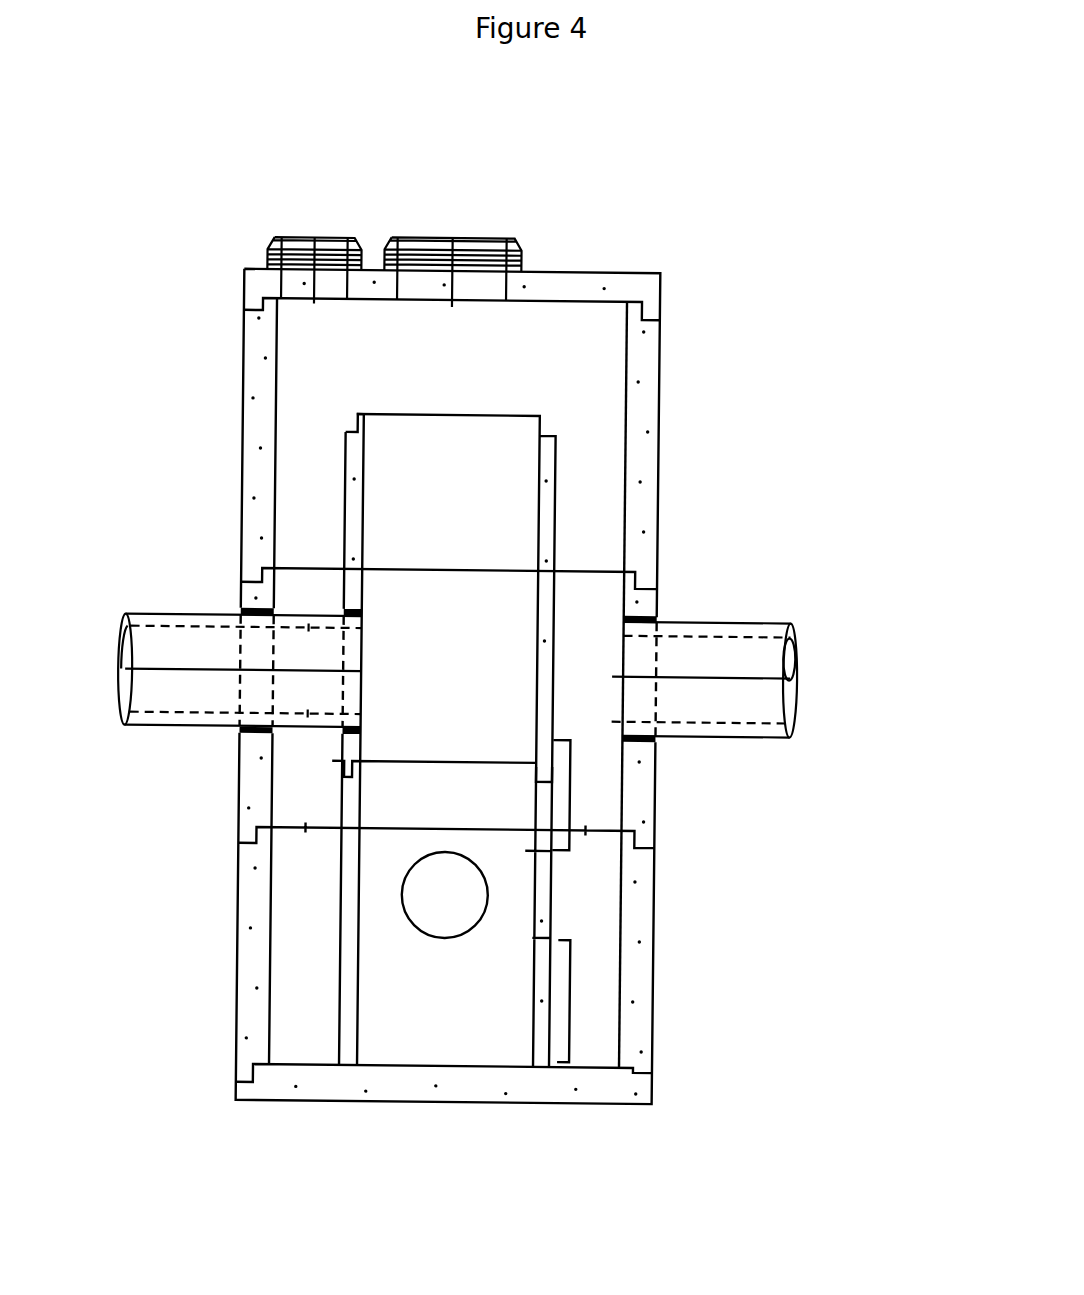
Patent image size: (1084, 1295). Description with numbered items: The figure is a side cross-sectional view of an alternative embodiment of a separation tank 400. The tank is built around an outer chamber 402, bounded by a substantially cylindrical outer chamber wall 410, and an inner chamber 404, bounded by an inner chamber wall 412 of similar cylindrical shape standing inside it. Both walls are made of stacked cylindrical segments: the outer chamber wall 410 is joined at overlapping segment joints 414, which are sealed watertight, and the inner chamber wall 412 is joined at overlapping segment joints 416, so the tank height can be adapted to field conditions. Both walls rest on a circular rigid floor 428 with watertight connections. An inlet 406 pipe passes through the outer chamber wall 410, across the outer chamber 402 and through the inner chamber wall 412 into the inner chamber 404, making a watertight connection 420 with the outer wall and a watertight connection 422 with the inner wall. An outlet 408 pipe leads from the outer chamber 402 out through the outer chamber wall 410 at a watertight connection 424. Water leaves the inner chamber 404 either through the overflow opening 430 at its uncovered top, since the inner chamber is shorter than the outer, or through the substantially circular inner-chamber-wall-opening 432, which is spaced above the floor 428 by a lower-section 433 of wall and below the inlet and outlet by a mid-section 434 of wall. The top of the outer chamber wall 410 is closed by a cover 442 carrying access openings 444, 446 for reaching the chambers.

The separation tank 400 is at (230, 191).
The outer chamber 402 is at (449, 455).
The inner chamber 404 is at (453, 740).
The inlet 406 is at (157, 613).
The outlet 408 is at (753, 622).
The outer chamber wall 410 is at (643, 428).
The inner chamber wall 412 is at (355, 480).
The segment joints 414 is at (250, 838).
The segment joints 416 is at (553, 781).
The watertight connection 420 is at (348, 615).
The watertight connection 422 is at (345, 730).
The watertight connection 424 is at (647, 617).
The floor 428 is at (430, 1090).
The overflow opening 430 is at (488, 414).
The inner-chamber-wall-opening 432 is at (402, 907).
The lower-section 433 is at (573, 1000).
The mid-section 434 is at (575, 800).
The cover 442 is at (643, 283).
The access opening 444 is at (508, 237).
The access opening 446 is at (300, 237).